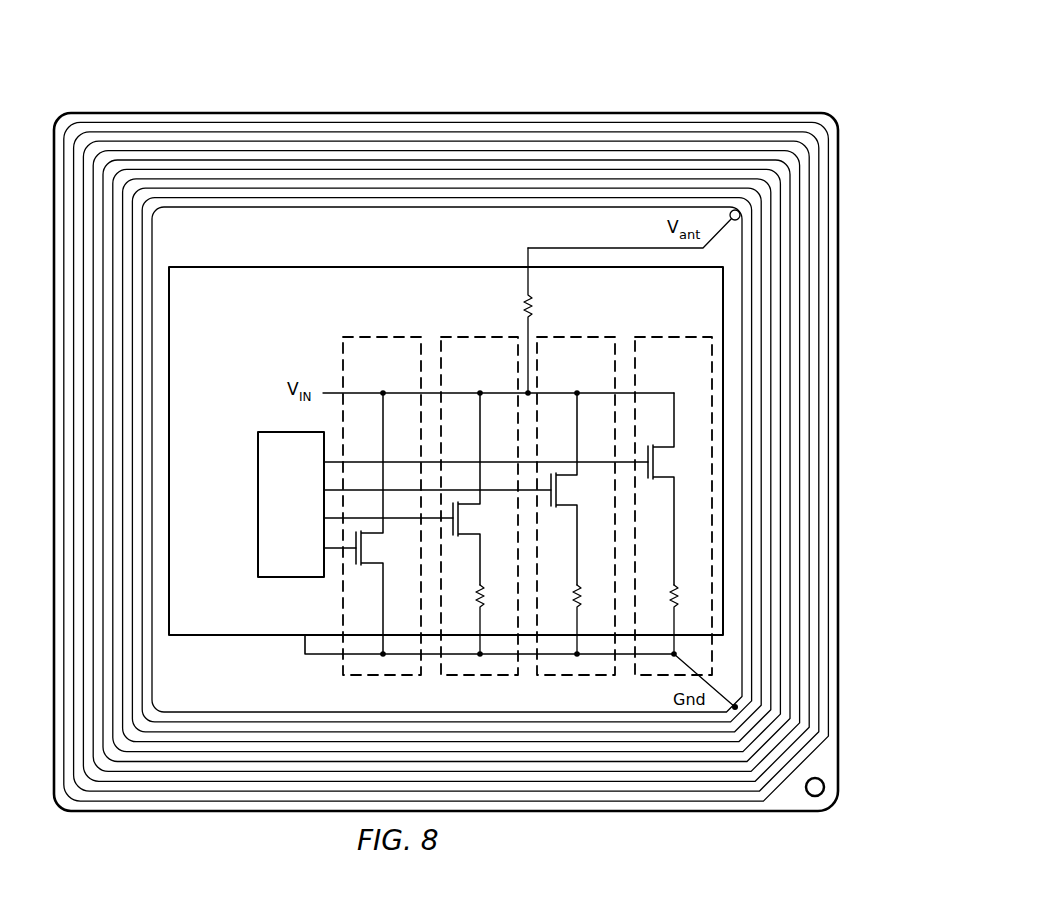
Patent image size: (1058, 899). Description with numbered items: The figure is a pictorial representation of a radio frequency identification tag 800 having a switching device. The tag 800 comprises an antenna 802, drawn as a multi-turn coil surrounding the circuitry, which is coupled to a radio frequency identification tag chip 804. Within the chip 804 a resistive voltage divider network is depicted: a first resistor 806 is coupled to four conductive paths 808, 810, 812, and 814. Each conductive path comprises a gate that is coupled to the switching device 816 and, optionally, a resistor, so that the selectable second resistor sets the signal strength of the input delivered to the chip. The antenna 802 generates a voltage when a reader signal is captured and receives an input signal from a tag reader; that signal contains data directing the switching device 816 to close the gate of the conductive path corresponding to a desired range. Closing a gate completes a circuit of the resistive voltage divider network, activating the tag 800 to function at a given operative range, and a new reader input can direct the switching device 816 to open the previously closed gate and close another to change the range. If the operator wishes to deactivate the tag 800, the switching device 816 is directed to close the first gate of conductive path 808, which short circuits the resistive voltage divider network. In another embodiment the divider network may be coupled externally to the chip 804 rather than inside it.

The radio frequency identification tag 800 is at (660, 64).
The antenna 802 is at (258, 112).
The radio frequency identification tag chip 804 is at (243, 637).
The resistor R1 806 is at (524, 300).
The conductive path 808 is at (399, 373).
The conductive path 810 is at (497, 373).
The conductive path 812 is at (593, 373).
The conductive path 814 is at (691, 373).
The switching device 816 is at (257, 505).